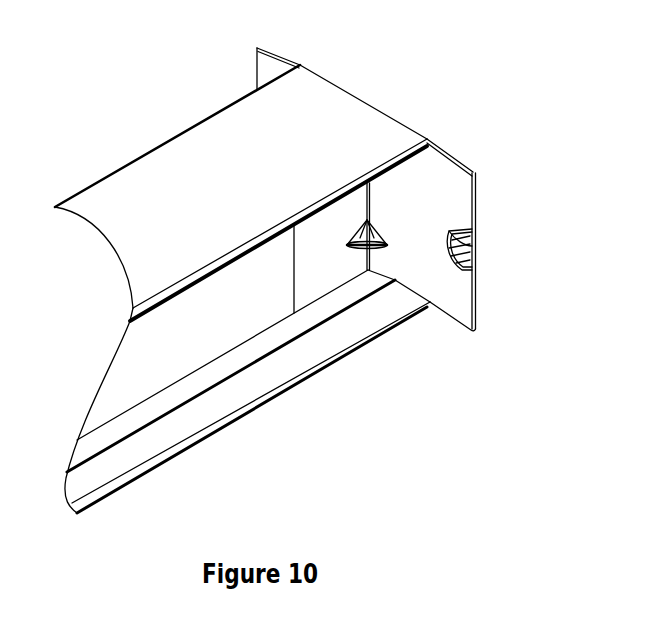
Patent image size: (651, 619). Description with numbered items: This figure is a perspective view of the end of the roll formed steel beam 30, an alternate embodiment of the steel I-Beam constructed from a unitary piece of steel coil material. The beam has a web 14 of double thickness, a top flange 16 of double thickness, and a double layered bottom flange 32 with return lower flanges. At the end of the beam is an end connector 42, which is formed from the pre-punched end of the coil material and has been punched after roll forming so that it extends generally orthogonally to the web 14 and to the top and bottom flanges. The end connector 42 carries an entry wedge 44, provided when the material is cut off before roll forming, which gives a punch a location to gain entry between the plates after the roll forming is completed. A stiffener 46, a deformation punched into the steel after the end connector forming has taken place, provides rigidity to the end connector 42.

The roll formed steel beam 30 is at (299, 271).
The web 14 is at (139, 367).
The top flange 16 is at (195, 163).
The bottom flange 32 is at (322, 350).
The end connector 42 is at (463, 180).
The entry wedge 44 is at (495, 250).
The stiffener 46 is at (390, 232).